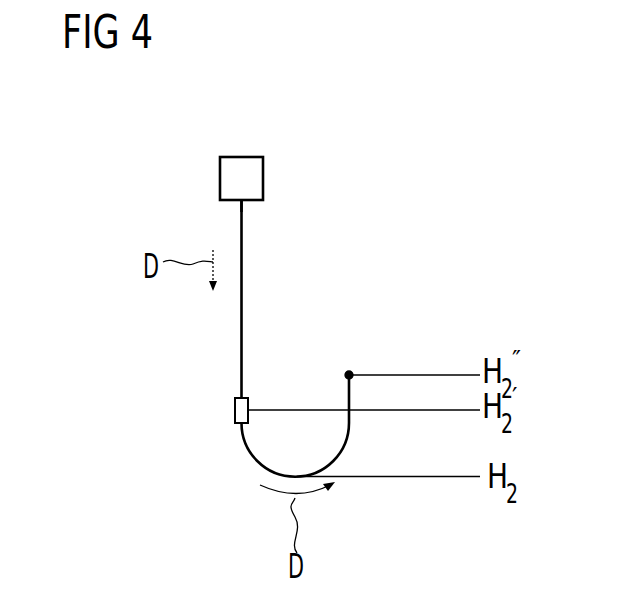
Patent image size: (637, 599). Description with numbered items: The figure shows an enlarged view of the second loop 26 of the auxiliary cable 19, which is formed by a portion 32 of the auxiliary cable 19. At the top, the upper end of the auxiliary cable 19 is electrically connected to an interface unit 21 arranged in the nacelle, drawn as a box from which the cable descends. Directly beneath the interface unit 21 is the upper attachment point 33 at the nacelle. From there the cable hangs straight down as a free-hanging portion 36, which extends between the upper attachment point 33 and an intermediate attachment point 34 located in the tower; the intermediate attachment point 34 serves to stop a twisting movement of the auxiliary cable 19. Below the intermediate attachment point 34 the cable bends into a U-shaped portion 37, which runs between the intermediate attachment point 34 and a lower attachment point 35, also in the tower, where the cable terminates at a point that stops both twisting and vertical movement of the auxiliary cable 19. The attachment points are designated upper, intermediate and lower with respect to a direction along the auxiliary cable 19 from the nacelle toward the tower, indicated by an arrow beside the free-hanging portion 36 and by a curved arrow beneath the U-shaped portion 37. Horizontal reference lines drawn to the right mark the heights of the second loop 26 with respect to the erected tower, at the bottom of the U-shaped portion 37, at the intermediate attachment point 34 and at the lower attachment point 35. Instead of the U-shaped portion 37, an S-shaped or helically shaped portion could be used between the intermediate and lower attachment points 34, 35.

The second loop 26 is at (270, 276).
The interface unit 21 is at (263, 177).
The upper attachment point 33 is at (236, 202).
The auxiliary cable 19 is at (218, 299).
The portion of the auxiliary cable 32 is at (284, 299).
The free-hanging portion 36 is at (284, 299).
The intermediate attachment point 34 is at (235, 415).
The lower attachment point 35 is at (350, 372).
The U-shaped portion 37 is at (347, 445).